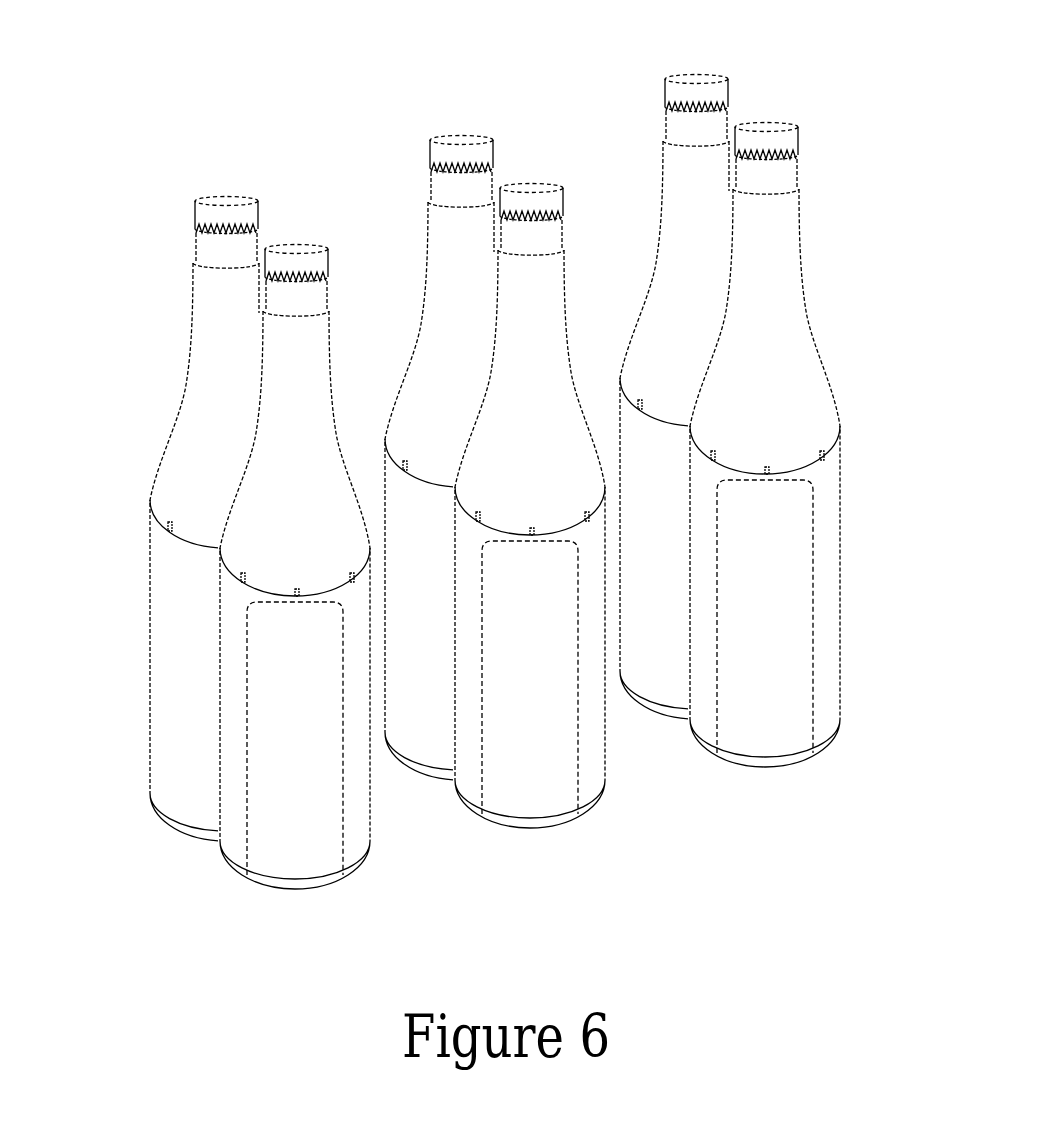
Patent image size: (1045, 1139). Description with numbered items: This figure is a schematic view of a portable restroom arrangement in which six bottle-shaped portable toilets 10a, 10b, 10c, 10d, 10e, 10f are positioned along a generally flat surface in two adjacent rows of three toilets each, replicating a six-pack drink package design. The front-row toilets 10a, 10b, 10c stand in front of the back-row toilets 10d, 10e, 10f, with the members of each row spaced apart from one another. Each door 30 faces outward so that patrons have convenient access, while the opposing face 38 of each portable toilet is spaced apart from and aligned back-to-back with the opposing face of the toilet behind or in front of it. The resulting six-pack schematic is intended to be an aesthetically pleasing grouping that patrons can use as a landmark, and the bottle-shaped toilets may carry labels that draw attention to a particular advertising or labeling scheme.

The portable toilet 10a is at (297, 892).
The portable toilet 10b is at (532, 828).
The portable toilet 10c is at (773, 768).
The portable toilet 10d is at (232, 202).
The portable toilet 10e is at (463, 140).
The portable toilet 10f is at (697, 78).
The door 30 is at (802, 670).
The opposing face 38 is at (157, 543).